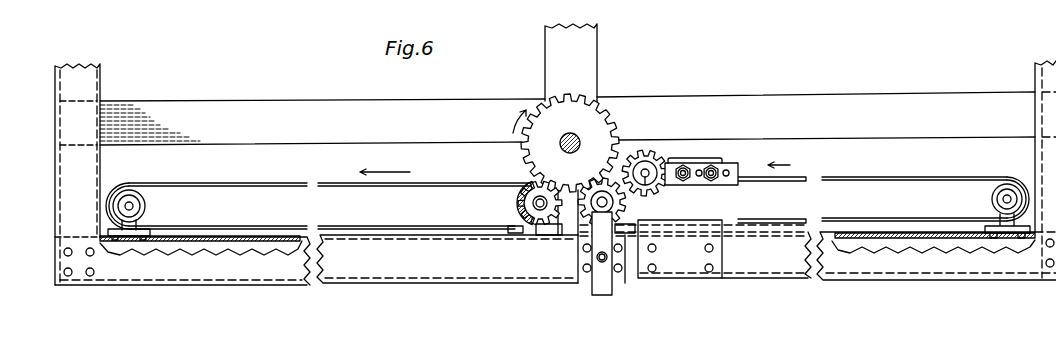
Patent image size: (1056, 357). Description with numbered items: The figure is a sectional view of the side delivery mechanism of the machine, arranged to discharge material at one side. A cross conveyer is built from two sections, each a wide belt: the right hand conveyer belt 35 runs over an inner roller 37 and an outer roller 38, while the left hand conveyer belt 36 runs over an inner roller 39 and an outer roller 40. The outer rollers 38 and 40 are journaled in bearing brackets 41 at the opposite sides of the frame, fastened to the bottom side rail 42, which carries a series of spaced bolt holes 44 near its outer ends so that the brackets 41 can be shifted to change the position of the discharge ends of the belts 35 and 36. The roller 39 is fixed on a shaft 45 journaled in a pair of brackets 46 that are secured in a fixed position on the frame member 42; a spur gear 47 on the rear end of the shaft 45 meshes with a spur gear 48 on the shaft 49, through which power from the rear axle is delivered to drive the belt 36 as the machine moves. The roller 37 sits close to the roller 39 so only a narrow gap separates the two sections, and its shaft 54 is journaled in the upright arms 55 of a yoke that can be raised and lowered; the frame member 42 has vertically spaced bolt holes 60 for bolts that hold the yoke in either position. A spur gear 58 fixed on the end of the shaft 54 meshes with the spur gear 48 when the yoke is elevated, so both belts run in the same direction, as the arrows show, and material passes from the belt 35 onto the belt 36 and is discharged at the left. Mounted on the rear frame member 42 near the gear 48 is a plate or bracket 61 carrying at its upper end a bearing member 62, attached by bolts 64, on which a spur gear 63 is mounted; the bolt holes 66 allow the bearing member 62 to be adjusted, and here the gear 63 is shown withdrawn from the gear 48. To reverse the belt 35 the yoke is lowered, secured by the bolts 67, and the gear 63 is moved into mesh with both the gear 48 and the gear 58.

The conveyer belt 35 is at (805, 182).
The conveyer belt 36 is at (432, 182).
The roller 37 is at (584, 216).
The roller 38 is at (988, 207).
The roller 39 is at (530, 188).
The roller 40 is at (144, 194).
The bearing bracket 41 is at (134, 211).
The bottom side rail 42 is at (430, 268).
The bolt hole 44 is at (256, 238).
The shaft 45 is at (532, 233).
The bracket 46 is at (520, 206).
The spur gear 47 is at (568, 153).
The spur gear 48 is at (595, 125).
The shaft 49 is at (566, 143).
The shaft 54 is at (607, 203).
The upright arm 55 is at (595, 280).
The spur gear 58 is at (626, 203).
The bolt hole 60 is at (683, 164).
The plate or bracket 61 is at (693, 268).
The bearing member 62 is at (693, 197).
The spur gear 63 is at (647, 153).
The bolt 64 is at (708, 198).
The bolt hole 66 is at (701, 194).
The bolt 67 is at (601, 264).